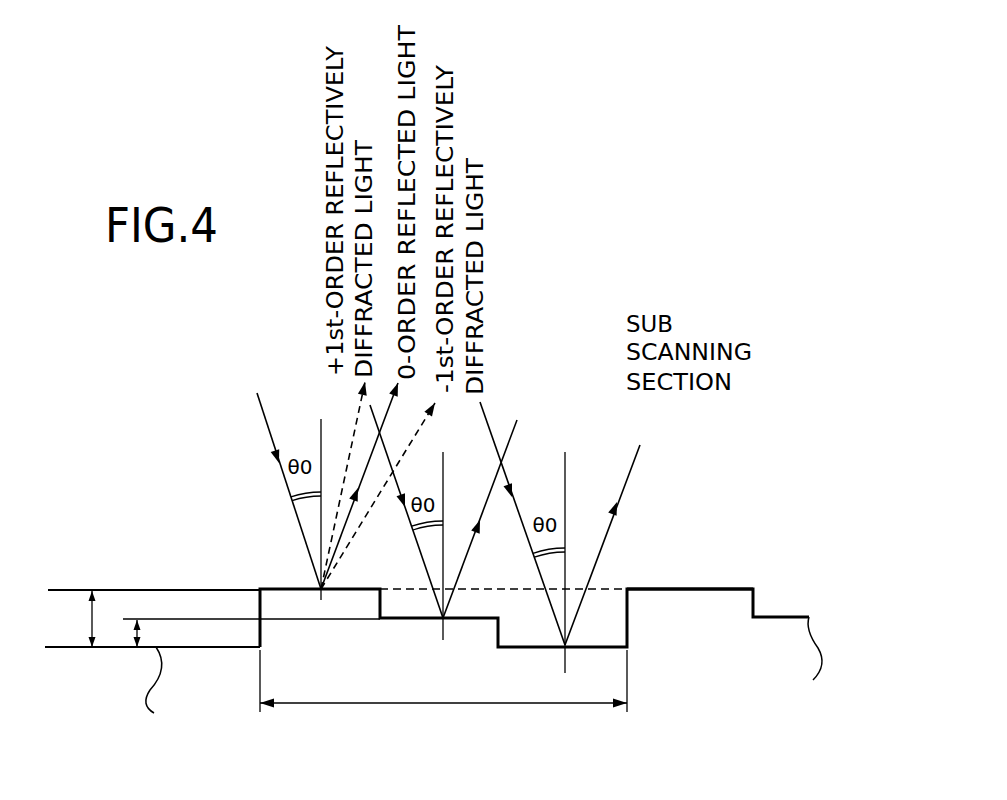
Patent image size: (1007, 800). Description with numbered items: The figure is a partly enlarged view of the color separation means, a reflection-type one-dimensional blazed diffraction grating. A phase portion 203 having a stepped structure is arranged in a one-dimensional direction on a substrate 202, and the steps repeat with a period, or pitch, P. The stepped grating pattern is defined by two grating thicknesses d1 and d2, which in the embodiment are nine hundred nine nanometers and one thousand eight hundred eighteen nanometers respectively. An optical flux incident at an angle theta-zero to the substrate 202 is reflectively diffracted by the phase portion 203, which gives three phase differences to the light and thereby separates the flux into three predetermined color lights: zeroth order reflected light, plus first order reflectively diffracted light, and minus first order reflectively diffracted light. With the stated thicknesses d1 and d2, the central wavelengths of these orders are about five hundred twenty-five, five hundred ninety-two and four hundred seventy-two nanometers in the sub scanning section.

The substrate 202 is at (809, 657).
The phase portion 203 is at (717, 599).
The grating thickness d1 is at (124, 633).
The grating thickness d2 is at (82, 619).
The period (pitch) P is at (443, 681).